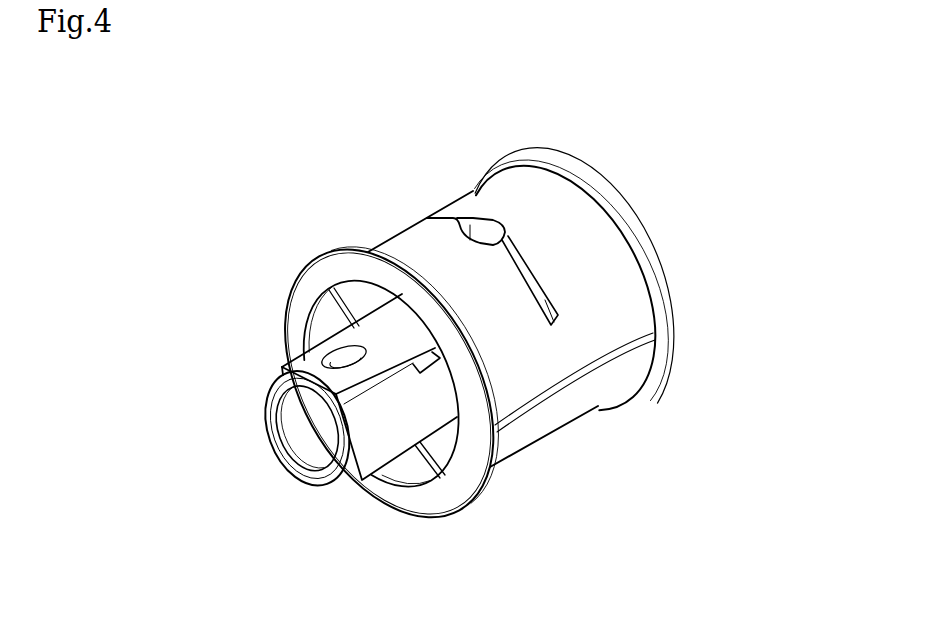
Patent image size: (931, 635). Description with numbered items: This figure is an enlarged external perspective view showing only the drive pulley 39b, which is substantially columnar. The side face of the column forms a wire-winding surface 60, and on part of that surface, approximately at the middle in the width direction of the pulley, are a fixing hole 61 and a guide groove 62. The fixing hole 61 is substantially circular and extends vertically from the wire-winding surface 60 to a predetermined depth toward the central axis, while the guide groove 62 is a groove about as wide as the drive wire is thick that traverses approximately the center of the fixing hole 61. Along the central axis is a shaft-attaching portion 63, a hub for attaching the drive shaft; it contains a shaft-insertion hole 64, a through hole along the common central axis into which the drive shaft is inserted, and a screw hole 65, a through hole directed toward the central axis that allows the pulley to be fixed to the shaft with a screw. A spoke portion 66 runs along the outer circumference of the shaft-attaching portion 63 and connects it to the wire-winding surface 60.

The drive pulley 39b is at (567, 469).
The wire-winding surface 60 is at (623, 307).
The fixing hole 61 is at (480, 228).
The guide groove 62 is at (537, 280).
The shaft-attaching portion 63 is at (282, 366).
The shaft-insertion hole 64 is at (305, 440).
The screw hole 65 is at (336, 360).
The spoke portion 66 is at (436, 446).